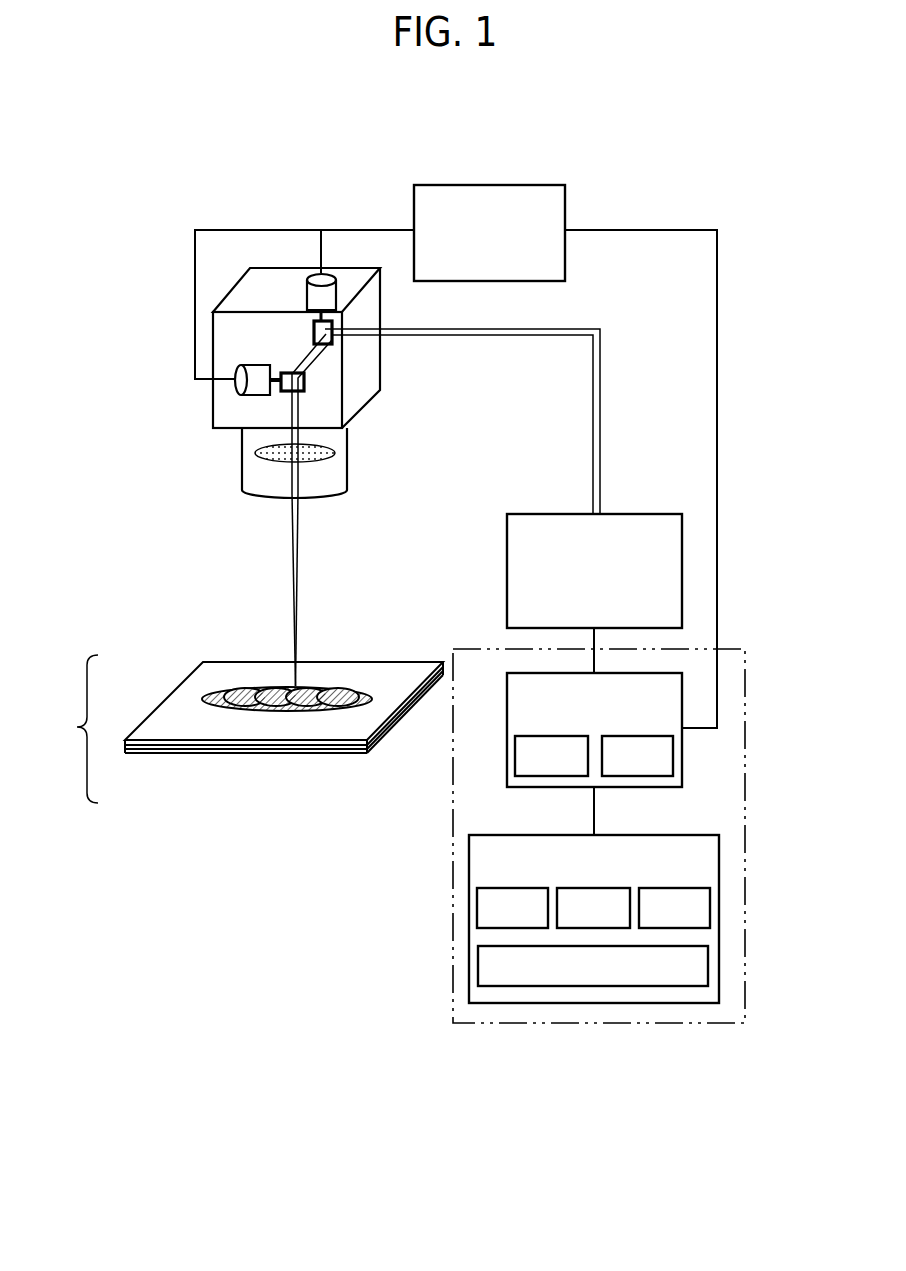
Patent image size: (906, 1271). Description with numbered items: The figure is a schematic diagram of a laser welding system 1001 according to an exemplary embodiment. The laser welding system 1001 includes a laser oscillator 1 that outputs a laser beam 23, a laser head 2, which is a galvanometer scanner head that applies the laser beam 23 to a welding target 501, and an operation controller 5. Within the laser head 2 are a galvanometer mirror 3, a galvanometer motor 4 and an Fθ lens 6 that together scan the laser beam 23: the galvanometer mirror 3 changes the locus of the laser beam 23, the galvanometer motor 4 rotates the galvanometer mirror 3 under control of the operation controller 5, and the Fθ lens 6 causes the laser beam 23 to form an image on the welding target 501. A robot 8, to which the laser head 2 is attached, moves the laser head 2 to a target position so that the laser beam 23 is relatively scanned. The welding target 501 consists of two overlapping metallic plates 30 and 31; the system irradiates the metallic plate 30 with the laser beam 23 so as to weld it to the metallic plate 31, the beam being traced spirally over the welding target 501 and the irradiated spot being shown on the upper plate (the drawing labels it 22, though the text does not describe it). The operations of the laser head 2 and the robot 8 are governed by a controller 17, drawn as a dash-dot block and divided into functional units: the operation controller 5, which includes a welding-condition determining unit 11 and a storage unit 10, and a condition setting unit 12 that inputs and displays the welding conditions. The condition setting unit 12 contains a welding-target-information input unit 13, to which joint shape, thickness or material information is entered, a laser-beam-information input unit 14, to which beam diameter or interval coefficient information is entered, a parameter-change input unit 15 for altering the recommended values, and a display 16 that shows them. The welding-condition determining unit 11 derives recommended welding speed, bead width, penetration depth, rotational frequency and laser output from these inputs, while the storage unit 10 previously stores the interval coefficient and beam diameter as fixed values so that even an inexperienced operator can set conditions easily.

The laser oscillator 1 is at (618, 517).
The laser head 2 is at (220, 414).
The galvanometer mirror 3 is at (315, 330).
The galvanometer motor 4 is at (315, 275).
The operation controller 5 is at (625, 691).
The Fθ lens 6 is at (265, 460).
The robot 8 is at (553, 189).
The storage unit 10 is at (551, 756).
The welding-condition determining unit 11 is at (637, 756).
The condition setting unit 12 is at (625, 897).
The welding-target-information input unit 13 is at (512, 908).
The laser-beam-information input unit 14 is at (593, 908).
The parameter-change input unit 15 is at (674, 908).
The display 16 is at (709, 962).
The controller 17 is at (614, 1025).
The welding spot 22 is at (297, 685).
The laser beam 23 is at (298, 543).
The metallic plate 30 is at (162, 728).
The metallic plate 31 is at (160, 754).
The welding target 501 is at (242, 729).
The laser welding system 1001 is at (488, 442).